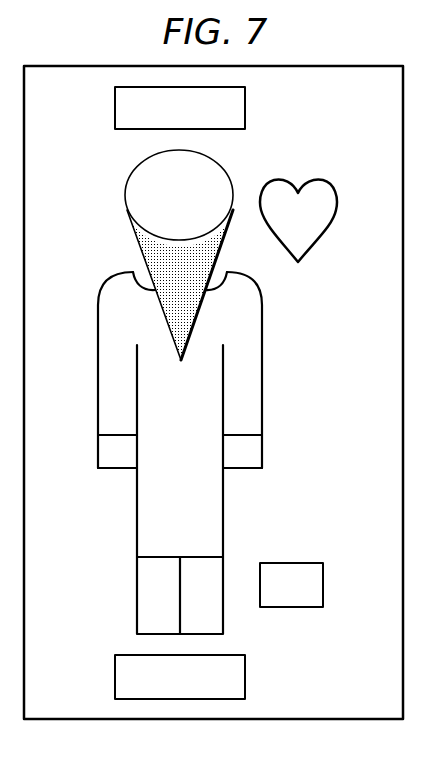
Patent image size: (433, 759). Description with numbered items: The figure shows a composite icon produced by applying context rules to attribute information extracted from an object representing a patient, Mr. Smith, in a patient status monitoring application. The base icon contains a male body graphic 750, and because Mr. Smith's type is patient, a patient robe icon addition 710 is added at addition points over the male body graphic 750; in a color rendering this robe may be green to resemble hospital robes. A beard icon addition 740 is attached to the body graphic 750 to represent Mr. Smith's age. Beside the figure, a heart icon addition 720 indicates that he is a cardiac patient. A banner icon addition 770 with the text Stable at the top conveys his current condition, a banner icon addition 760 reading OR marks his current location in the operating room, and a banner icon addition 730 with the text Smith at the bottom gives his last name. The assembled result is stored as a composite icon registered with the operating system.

The patient robe icon addition 710 is at (263, 387).
The heart icon addition 720 is at (322, 230).
The banner icon addition 730 is at (246, 677).
The beard icon addition 740 is at (137, 242).
The male body graphic 750 is at (128, 191).
The banner icon addition 760 is at (324, 583).
The banner icon addition 770 is at (245, 110).